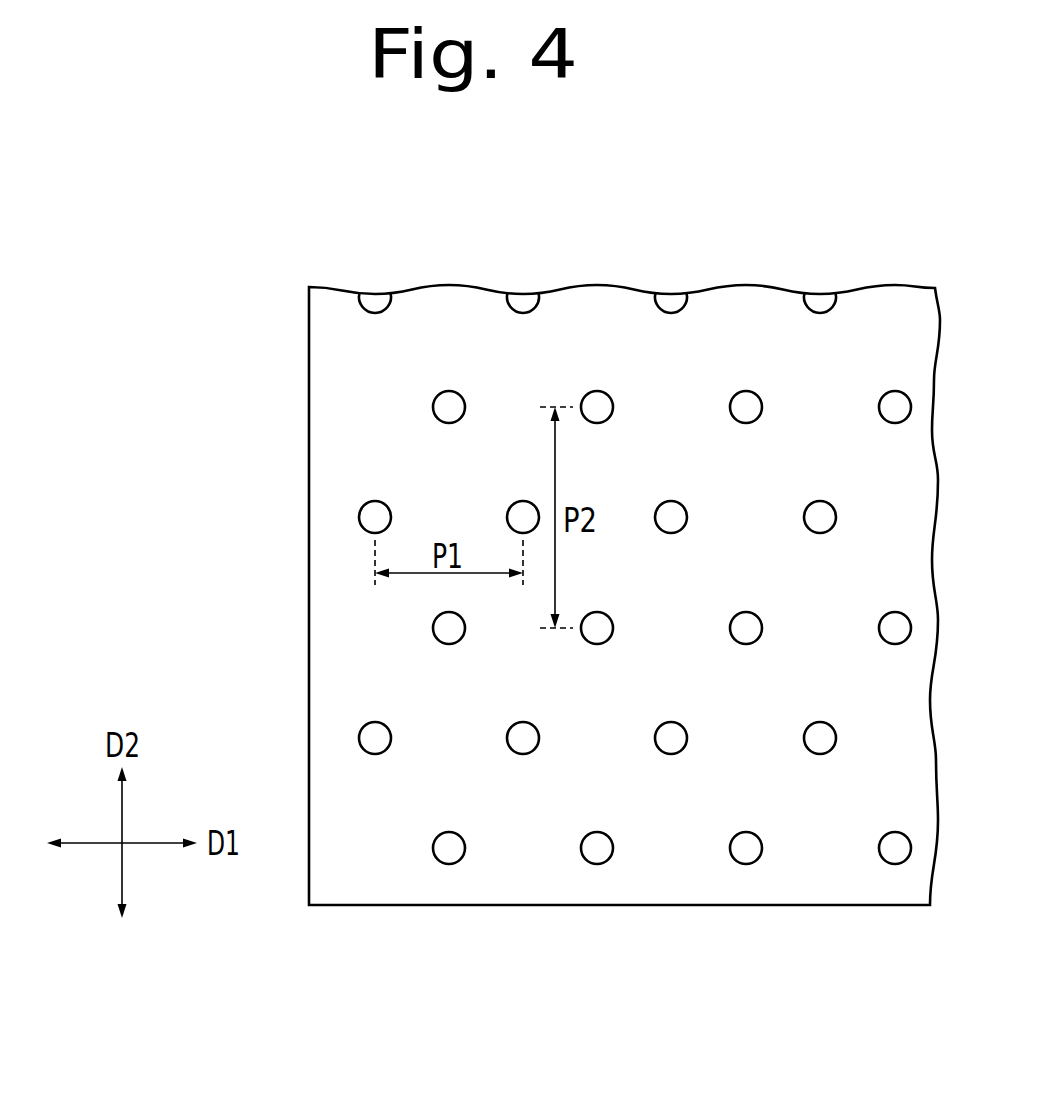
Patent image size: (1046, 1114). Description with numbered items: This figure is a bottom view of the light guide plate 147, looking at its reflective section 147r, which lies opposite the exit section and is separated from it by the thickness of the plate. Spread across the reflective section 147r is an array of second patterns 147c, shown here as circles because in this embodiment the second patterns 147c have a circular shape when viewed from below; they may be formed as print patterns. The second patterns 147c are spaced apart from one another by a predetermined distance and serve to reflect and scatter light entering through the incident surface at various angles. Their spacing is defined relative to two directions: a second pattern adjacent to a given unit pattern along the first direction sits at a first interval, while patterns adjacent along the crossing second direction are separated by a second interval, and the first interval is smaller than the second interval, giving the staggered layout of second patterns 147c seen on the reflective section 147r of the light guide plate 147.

The light guide plate 147 is at (549, 532).
The reflective section 147r is at (330, 420).
The second pattern 147c is at (362, 517).